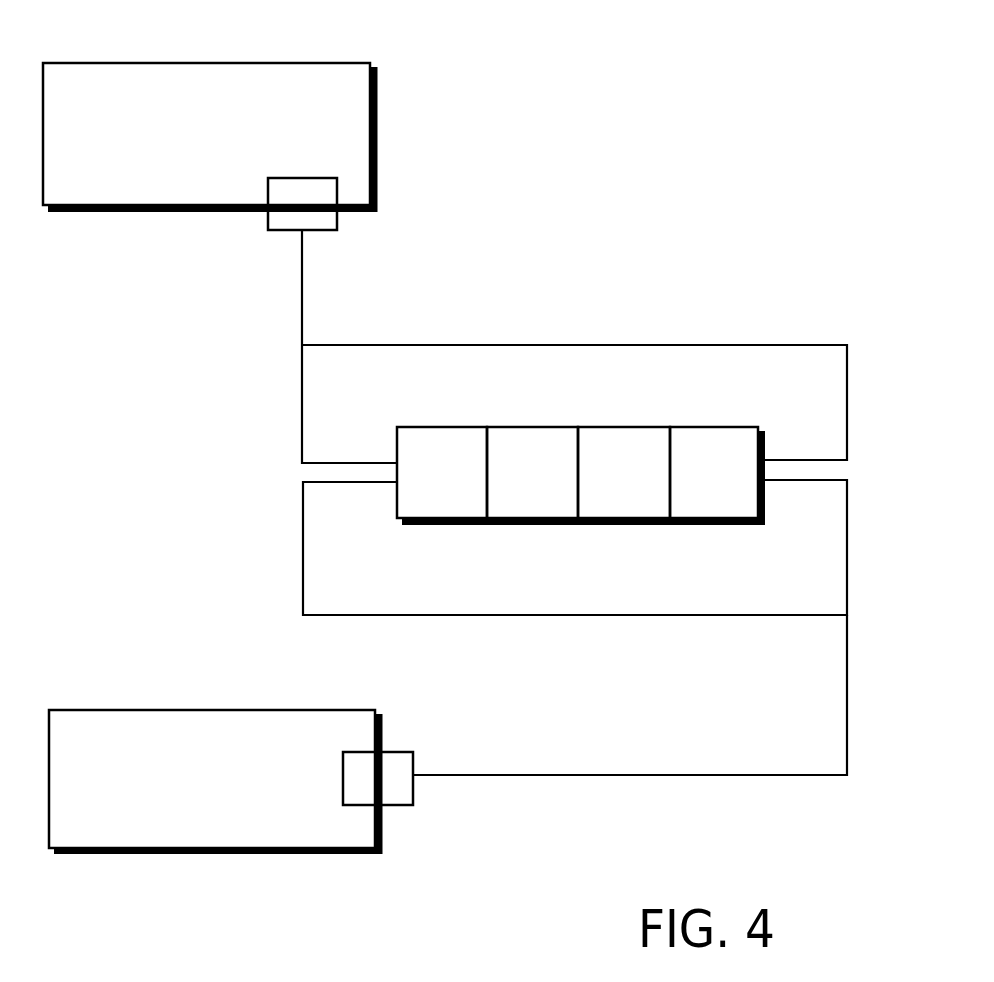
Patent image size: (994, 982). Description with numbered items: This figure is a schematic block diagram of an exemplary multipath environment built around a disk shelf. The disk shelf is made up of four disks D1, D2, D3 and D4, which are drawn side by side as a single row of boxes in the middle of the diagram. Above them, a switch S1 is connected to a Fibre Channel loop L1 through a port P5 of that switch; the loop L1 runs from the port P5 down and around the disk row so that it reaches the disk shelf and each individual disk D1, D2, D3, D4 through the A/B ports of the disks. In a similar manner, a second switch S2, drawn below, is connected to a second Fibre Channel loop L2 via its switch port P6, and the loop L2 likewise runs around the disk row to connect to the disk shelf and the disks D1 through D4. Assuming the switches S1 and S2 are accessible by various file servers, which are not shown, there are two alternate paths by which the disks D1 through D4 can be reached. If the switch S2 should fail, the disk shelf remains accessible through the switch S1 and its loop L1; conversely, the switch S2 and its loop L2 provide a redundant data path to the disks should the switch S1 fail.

The switch S1 is at (285, 63).
The switch S2 is at (140, 708).
The port P5 is at (268, 230).
The switch port P6 is at (410, 807).
The Fibre Channel loop L1 is at (302, 440).
The Fibre Channel loop L2 is at (848, 643).
The disk D1 is at (430, 526).
The disk D2 is at (533, 526).
The disk D3 is at (620, 526).
The disk D4 is at (718, 526).